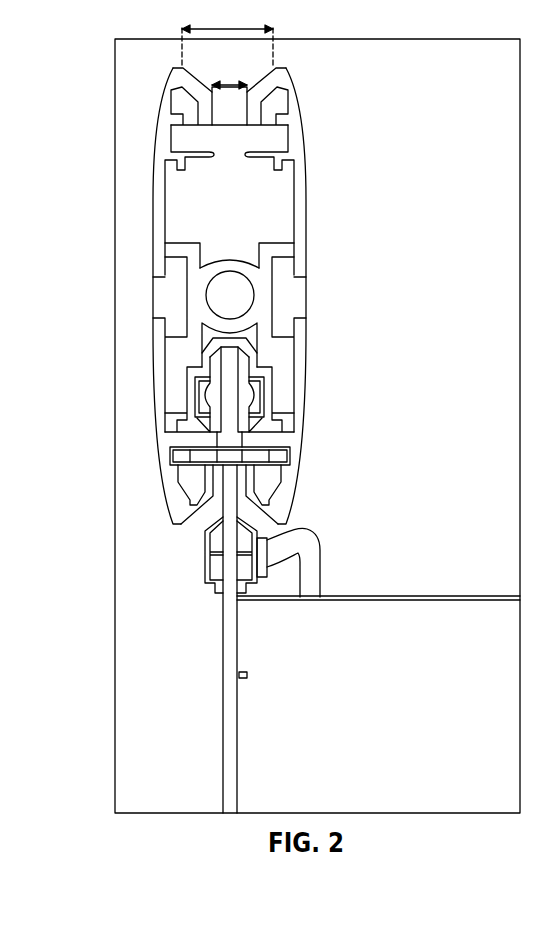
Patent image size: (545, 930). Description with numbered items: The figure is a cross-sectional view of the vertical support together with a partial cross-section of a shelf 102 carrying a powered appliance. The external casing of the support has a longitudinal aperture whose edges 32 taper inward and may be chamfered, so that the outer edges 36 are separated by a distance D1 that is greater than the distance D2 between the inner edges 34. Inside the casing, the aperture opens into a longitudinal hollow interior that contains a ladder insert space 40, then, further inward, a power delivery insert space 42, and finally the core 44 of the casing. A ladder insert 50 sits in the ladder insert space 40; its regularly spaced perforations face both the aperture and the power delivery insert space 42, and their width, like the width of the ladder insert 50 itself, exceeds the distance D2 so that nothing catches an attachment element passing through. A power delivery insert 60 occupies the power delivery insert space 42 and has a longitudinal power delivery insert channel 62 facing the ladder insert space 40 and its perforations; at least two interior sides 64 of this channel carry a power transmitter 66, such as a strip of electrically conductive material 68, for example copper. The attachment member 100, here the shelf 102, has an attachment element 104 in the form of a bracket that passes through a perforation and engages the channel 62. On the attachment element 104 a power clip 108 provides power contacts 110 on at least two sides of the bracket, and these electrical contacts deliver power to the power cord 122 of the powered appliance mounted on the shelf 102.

The edges of the longitudinal aperture 32 is at (253, 73).
The inner edges of the longitudinal aperture 34 is at (216, 96).
The outer edges of the longitudinal aperture 36 is at (182, 67).
The ladder insert space 40 is at (273, 140).
The power delivery insert space 42 is at (273, 213).
The core 44 is at (230, 293).
The ladder insert 50 is at (280, 456).
The power delivery insert 60 is at (283, 414).
The power delivery insert channel 62 is at (247, 362).
The interior sides of the power delivery insert channel 64 is at (210, 358).
The power transmitter 66 is at (260, 392).
The strip of electrically conductive material 68 is at (256, 404).
The attachment member 100 is at (222, 736).
The shelf 102 is at (476, 613).
The attachment element 104 is at (232, 296).
The power clip 108 is at (204, 566).
The power contact 110 is at (258, 418).
The power cord 122 is at (308, 554).
The distance between outer edges D1 is at (223, 28).
The distance between inner edges D2 is at (221, 82).